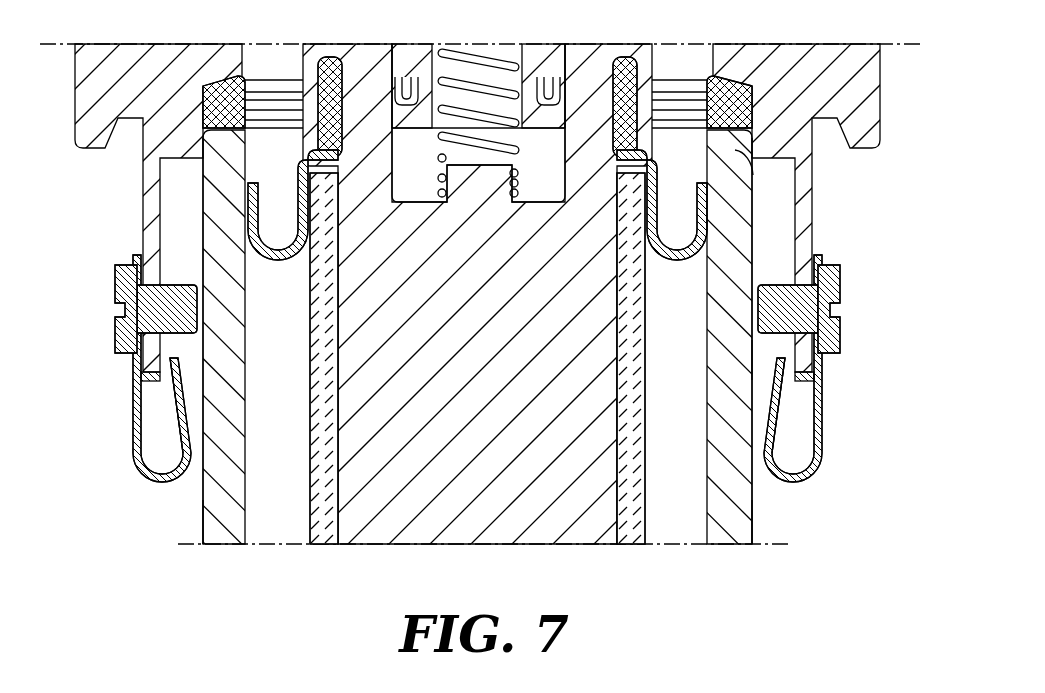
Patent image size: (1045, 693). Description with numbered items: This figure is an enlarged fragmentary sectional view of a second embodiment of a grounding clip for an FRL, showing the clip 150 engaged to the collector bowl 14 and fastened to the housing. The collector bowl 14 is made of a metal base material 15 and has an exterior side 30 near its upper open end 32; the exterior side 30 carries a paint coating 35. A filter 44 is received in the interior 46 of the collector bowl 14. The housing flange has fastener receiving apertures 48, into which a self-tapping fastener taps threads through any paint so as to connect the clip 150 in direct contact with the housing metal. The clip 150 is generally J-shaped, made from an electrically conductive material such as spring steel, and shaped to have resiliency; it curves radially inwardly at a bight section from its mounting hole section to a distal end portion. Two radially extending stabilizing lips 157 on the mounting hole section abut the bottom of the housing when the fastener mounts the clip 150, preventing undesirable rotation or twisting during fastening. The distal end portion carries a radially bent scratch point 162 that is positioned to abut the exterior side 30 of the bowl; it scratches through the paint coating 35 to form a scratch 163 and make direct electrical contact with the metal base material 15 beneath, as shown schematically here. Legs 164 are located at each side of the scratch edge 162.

The collector bowl 14 is at (222, 534).
The metal base material 15 is at (232, 535).
The exterior side 30 is at (205, 527).
The upper open end 32 is at (737, 150).
The paint coating 35 is at (203, 500).
The filter 44 is at (632, 533).
The interior 46 is at (280, 518).
The fastener receiving apertures 48 is at (823, 296).
The clip 150 is at (824, 424).
The stabilizing lips 157 is at (152, 378).
The scratch point 162 is at (178, 381).
The scratch 163 is at (203, 535).
The legs 164 is at (748, 358).